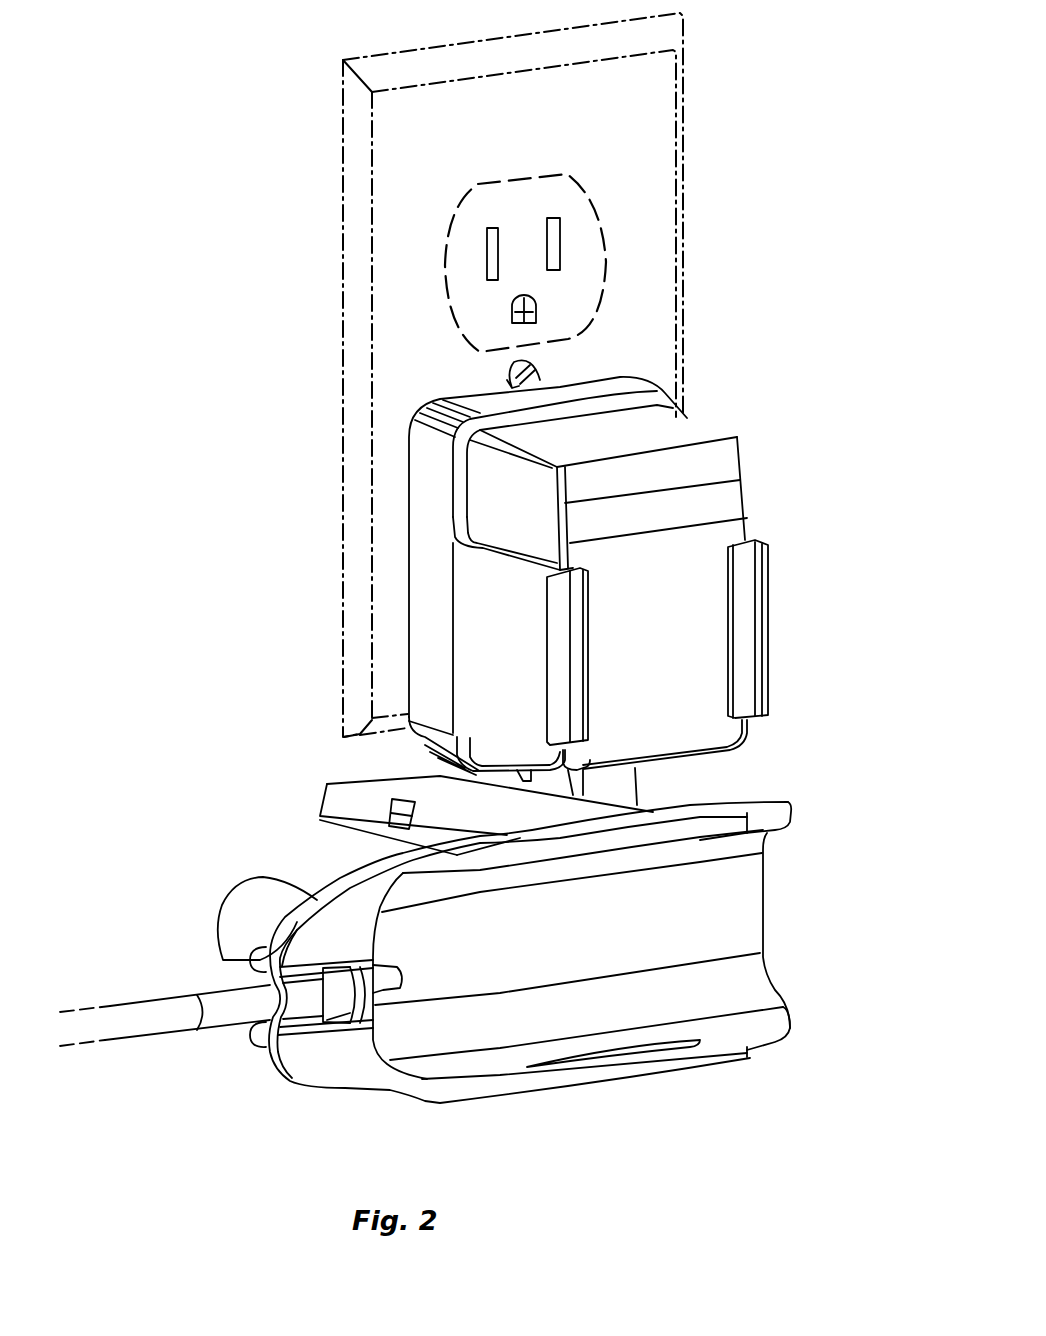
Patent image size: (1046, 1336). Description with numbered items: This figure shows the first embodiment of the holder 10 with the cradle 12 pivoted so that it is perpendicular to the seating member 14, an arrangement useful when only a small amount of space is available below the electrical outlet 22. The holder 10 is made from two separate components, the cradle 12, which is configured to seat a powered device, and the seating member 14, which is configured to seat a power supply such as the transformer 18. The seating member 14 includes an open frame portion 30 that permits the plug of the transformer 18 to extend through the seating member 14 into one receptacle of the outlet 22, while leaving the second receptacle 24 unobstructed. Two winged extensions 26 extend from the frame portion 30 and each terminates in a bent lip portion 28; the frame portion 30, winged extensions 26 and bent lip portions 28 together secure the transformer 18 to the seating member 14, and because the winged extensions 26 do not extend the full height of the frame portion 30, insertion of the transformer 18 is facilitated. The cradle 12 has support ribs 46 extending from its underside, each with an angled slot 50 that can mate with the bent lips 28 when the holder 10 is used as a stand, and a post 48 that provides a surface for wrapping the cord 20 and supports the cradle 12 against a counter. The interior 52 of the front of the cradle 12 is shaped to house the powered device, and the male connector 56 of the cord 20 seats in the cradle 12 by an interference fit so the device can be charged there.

The holder 10 is at (240, 741).
The cradle 12 is at (797, 923).
The seating member 14 is at (758, 401).
The transformer 18 is at (665, 643).
The cord 20 is at (141, 1010).
The electrical outlet 22 is at (638, 133).
The second receptacle 24 is at (582, 262).
The winged extensions 26 is at (510, 684).
The bent lip portion 28 is at (577, 627).
The frame portion 30 is at (427, 466).
The support ribs 46 is at (407, 778).
The post 48 is at (233, 911).
The slot 50 is at (391, 822).
The interior 52 is at (633, 1012).
The male connector 56 is at (397, 1018).